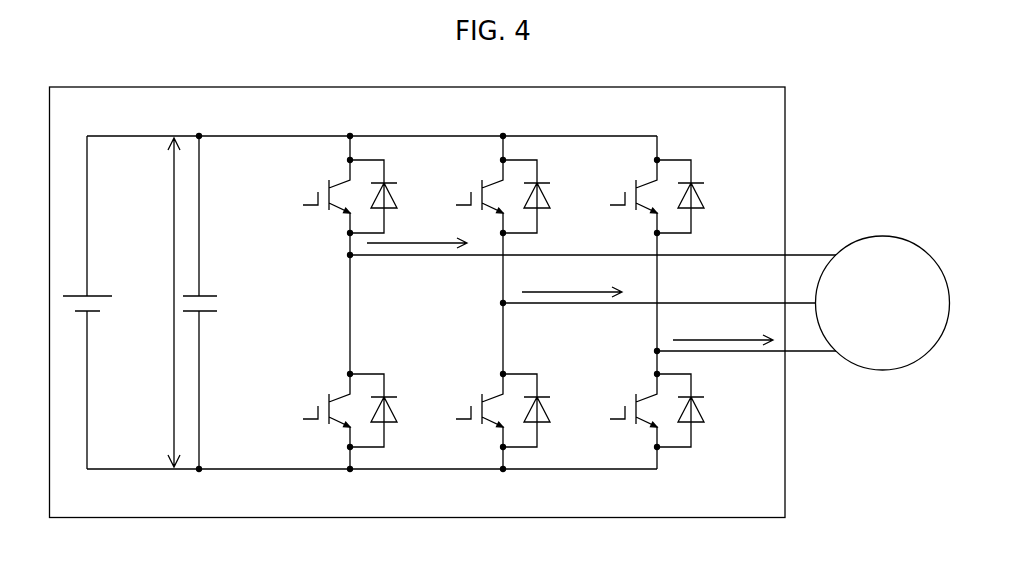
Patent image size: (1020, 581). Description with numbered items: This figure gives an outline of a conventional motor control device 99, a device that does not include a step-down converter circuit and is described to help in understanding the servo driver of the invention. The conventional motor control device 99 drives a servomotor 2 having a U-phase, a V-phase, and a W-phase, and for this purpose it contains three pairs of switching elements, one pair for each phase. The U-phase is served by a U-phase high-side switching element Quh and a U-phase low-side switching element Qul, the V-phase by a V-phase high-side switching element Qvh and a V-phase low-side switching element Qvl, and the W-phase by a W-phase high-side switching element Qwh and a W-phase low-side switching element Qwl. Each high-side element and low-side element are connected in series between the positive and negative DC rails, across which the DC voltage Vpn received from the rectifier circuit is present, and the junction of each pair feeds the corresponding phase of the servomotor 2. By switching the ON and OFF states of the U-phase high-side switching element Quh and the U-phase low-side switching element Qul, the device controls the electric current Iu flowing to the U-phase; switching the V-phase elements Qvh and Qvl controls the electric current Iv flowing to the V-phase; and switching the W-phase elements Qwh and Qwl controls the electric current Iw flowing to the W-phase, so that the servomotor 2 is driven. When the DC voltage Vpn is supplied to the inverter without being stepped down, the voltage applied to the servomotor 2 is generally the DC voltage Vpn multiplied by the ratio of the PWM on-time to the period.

The conventional motor control device 99 is at (754, 87).
The servomotor 2 is at (885, 236).
The U-phase high-side switching element Quh is at (342, 197).
The V-phase high-side switching element Qvh is at (495, 197).
The W-phase high-side switching element Qwh is at (649, 197).
The U-phase low-side switching element Qul is at (342, 411).
The V-phase low-side switching element Qvl is at (495, 411).
The W-phase low-side switching element Qwl is at (649, 411).
The DC voltage Vpn is at (156, 302).
The U-phase electric current Iu is at (417, 233).
The V-phase electric current Iv is at (572, 281).
The W-phase electric current Iw is at (723, 330).